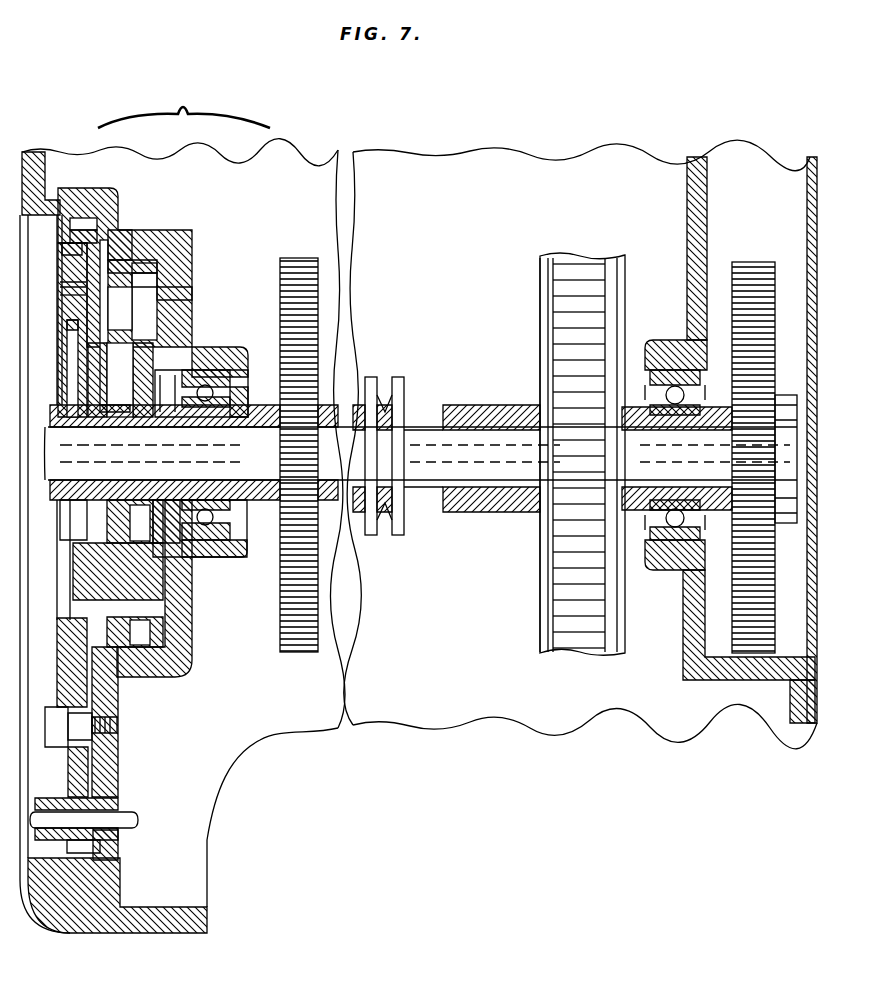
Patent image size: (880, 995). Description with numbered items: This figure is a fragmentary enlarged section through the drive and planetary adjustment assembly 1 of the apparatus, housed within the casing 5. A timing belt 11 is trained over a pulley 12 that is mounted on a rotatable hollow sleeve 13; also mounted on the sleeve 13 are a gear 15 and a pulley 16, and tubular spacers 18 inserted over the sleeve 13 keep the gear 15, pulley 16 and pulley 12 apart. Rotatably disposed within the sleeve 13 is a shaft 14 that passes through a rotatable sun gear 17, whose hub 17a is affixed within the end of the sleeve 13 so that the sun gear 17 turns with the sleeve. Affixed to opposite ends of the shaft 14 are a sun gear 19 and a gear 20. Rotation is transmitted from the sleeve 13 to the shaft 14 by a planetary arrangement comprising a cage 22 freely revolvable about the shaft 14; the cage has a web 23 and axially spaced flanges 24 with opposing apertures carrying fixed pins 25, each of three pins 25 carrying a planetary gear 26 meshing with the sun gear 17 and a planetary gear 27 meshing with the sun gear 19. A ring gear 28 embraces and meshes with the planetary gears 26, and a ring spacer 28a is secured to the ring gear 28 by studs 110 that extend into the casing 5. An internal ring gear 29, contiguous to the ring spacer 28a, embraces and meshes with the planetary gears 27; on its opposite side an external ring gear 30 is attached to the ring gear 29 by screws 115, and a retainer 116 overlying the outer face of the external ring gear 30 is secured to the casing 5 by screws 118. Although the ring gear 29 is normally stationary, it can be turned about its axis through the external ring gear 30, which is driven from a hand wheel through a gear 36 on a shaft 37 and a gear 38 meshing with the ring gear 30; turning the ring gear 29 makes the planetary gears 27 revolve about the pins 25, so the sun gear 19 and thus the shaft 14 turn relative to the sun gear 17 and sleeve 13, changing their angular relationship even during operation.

The clutch assembly 1 is at (184, 101).
The casing 5 is at (33, 152).
The timing belt 11 is at (576, 268).
The pulley 12 is at (540, 303).
The hollow sleeve 13 is at (480, 430).
The shaft 14 is at (176, 433).
The gear 15 is at (296, 258).
The pulley 16 is at (392, 380).
The sun gear 17 is at (148, 427).
The hub 17a is at (200, 427).
The tubular spacers 18 is at (473, 405).
The sun gear 19 is at (102, 427).
The gear 20 is at (750, 268).
The cage 22 is at (165, 580).
The web 23 is at (120, 513).
The flanges 24 is at (70, 322).
The pins 25 is at (160, 332).
The planetary gear 26 is at (178, 296).
The planetary gear 27 is at (70, 290).
The ring gear 28 is at (150, 262).
The ring spacer 28a is at (130, 262).
The internal ring gear 29 is at (125, 235).
The external ring gear 30 is at (70, 263).
The gear 36 is at (80, 845).
The shaft 37 is at (125, 815).
The gear 38 is at (90, 768).
The studs 110 is at (143, 247).
The screws 115 is at (120, 668).
The retainer 116 is at (62, 246).
The screws 118 is at (82, 243).